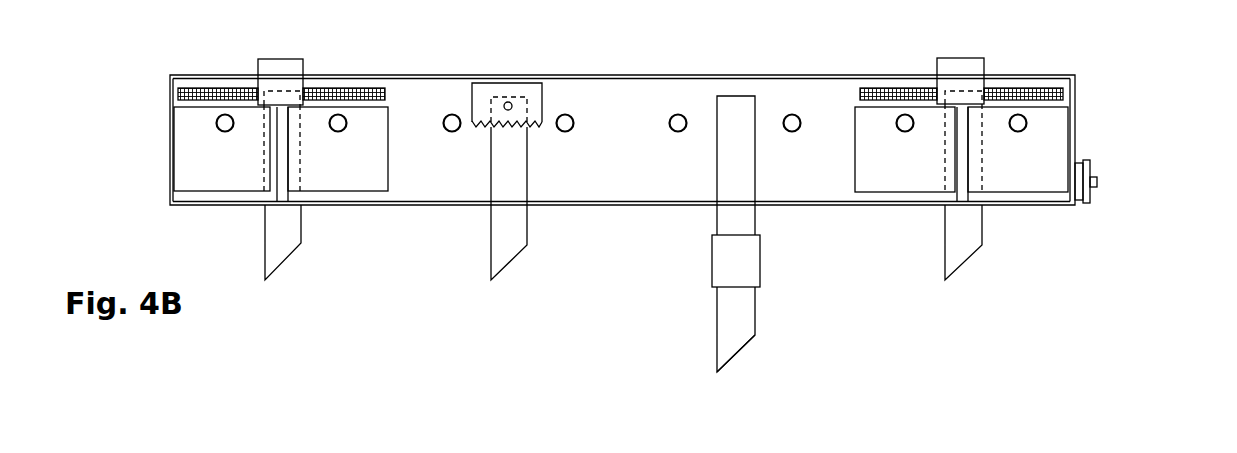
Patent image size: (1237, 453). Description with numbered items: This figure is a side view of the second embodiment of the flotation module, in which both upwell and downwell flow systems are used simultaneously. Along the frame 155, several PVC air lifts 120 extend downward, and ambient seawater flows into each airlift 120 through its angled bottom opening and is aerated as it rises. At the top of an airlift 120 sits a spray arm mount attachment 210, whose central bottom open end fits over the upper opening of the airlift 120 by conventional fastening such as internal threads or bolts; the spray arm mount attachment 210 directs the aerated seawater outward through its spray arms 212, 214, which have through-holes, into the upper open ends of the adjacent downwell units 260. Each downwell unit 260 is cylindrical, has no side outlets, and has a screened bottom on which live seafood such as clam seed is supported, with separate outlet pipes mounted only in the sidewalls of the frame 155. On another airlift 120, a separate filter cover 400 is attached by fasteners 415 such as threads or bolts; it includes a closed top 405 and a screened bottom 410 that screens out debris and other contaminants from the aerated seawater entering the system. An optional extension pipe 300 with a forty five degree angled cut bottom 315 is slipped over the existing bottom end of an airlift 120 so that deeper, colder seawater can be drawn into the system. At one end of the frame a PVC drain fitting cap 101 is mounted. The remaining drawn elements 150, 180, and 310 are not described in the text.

The PVC drain fitting cap 101 is at (1088, 192).
The PVC air lift 120 is at (280, 252).
The rail housing 150 is at (225, 205).
The frame 155 is at (170, 163).
The mounting holes 180 is at (675, 120).
The spray arm mount attachment 210 is at (275, 65).
The spray arm 212 is at (203, 88).
The spray arm 214 is at (345, 88).
The downwell unit 260 is at (372, 192).
The extension pipe 300 is at (728, 312).
The blade block 310 is at (723, 258).
The forty five degree angled cut bottom 315 is at (742, 350).
The filter cover 400 is at (511, 109).
The closed top 405 is at (506, 82).
The screened bottom 410 is at (483, 125).
The fasteners 415 is at (525, 127).